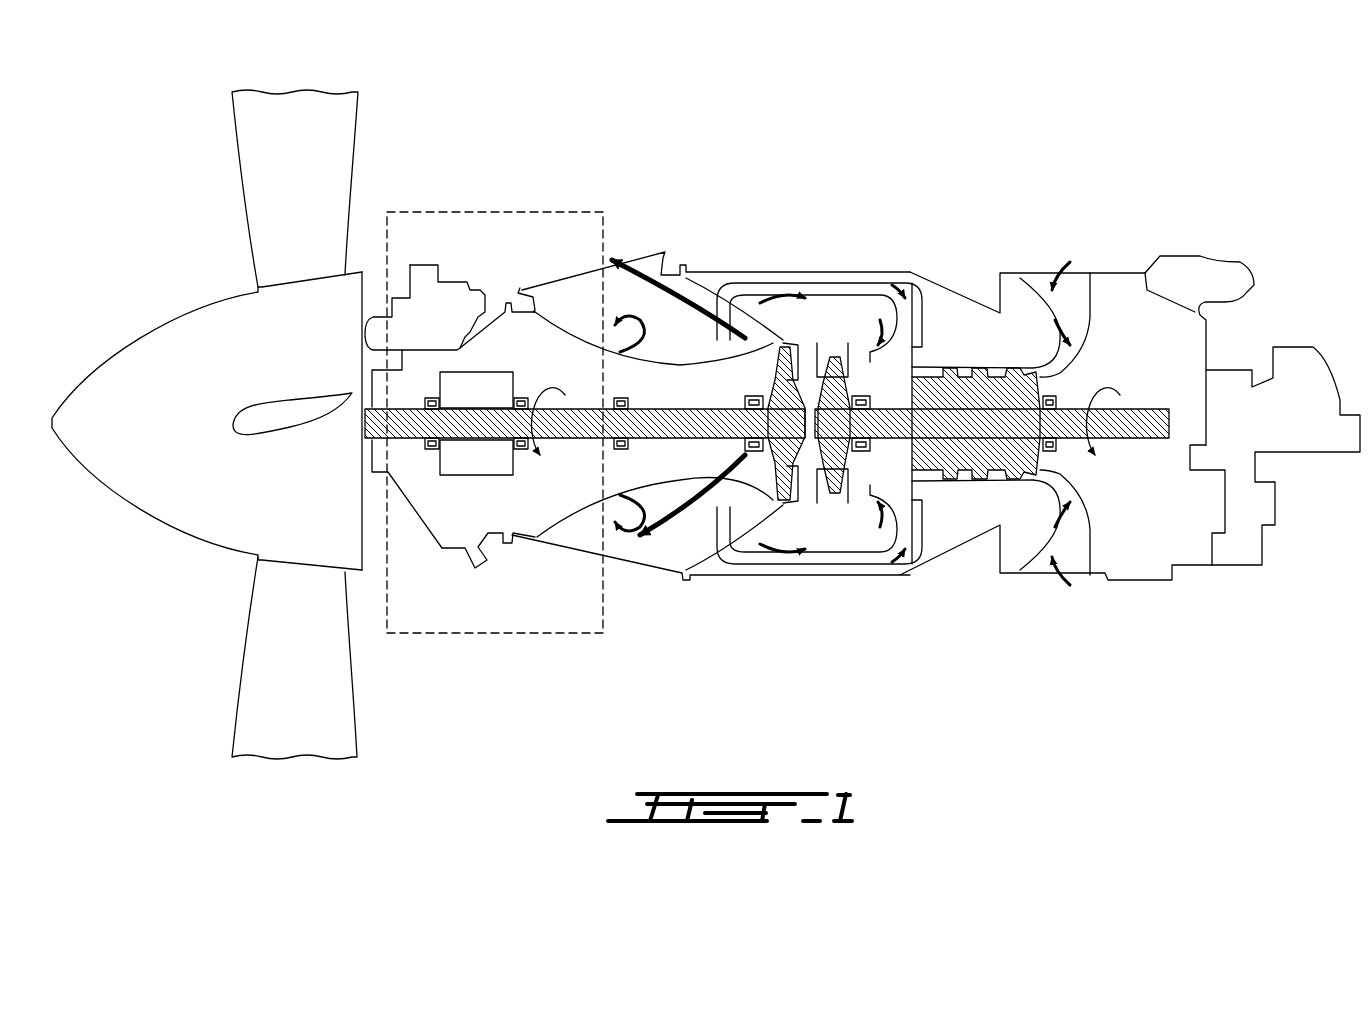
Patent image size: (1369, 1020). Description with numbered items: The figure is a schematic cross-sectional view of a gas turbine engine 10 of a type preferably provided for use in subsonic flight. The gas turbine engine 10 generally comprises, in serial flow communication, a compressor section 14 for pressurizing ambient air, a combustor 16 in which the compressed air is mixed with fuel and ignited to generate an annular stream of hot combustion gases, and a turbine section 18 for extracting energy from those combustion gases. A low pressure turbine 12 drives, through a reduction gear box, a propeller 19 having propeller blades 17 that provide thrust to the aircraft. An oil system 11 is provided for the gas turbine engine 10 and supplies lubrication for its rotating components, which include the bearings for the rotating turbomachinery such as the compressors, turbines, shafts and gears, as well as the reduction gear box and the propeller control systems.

The gas turbine engine 10 is at (1072, 150).
The oil system 11 is at (518, 205).
The low pressure turbine 12 is at (781, 342).
The compressor section 14 is at (976, 353).
The combustor 16 is at (818, 293).
The propeller blades 17 is at (330, 128).
The turbine section 18 is at (803, 495).
The propeller 19 is at (165, 473).